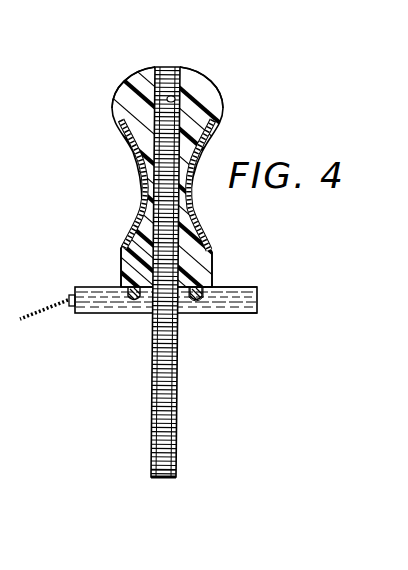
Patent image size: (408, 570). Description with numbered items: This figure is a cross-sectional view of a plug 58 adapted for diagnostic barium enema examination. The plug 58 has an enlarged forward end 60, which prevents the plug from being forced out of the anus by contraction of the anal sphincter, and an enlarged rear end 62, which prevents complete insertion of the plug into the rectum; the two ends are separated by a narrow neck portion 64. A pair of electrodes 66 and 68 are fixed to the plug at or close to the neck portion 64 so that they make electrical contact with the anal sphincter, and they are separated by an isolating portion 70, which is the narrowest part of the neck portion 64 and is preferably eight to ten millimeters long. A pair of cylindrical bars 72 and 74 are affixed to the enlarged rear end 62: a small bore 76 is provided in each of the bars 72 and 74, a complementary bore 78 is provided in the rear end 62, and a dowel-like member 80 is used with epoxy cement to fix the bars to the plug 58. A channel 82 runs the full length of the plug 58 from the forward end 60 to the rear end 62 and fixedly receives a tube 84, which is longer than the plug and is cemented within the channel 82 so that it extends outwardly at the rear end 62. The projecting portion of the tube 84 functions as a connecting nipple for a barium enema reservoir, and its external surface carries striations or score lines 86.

The plug 58 is at (120, 77).
The enlarged forward end 60 is at (195, 71).
The enlarged rear end 62 is at (121, 251).
The neck portion 64 is at (136, 178).
The electrode 66 is at (121, 134).
The electrode 68 is at (142, 203).
The isolating portion 70 is at (191, 196).
The bar 72 is at (100, 308).
The bar 74 is at (228, 310).
The bore 76 is at (201, 316).
The complementary bore 78 is at (205, 292).
The dowel-like member 80 is at (198, 288).
The channel 82 is at (176, 98).
The tube 84 is at (159, 79).
The striations or score lines 86 is at (176, 433).